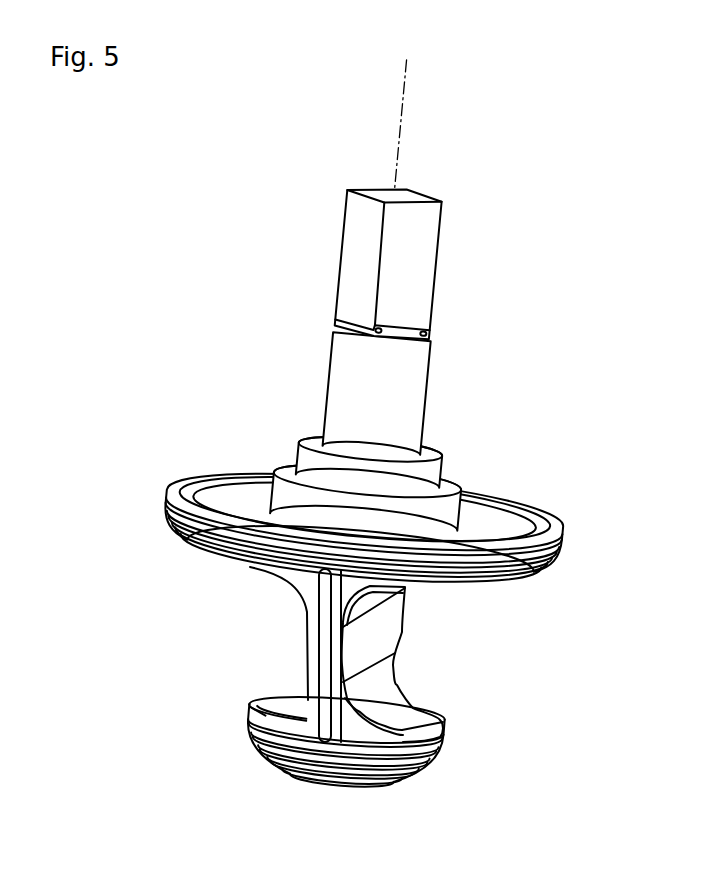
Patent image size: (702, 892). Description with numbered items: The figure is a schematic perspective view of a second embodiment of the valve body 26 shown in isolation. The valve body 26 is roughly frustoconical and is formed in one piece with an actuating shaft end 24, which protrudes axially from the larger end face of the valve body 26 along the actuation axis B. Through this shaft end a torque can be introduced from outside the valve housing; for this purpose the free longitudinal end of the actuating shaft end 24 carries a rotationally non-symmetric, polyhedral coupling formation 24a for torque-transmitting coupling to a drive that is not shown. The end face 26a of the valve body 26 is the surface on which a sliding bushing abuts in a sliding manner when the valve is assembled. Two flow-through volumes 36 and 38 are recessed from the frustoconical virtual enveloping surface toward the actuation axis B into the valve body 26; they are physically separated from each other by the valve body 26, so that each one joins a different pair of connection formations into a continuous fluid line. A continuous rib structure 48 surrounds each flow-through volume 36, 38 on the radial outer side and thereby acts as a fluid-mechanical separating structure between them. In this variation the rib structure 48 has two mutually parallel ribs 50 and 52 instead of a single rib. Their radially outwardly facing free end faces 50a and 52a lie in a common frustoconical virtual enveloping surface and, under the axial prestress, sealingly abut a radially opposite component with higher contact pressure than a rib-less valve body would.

The actuation axis B is at (403, 78).
The actuating shaft end 24 is at (342, 344).
The coupling formation 24a is at (358, 223).
The valve body 26 is at (393, 631).
The end face 26a is at (243, 498).
The flow-through volume 36 is at (268, 624).
The flow-through volume 38 is at (472, 638).
The rib structure 48 is at (393, 509).
The rib 50 is at (170, 510).
The rib 52 is at (170, 525).
The end face 50a is at (440, 750).
The end face 52a is at (432, 763).